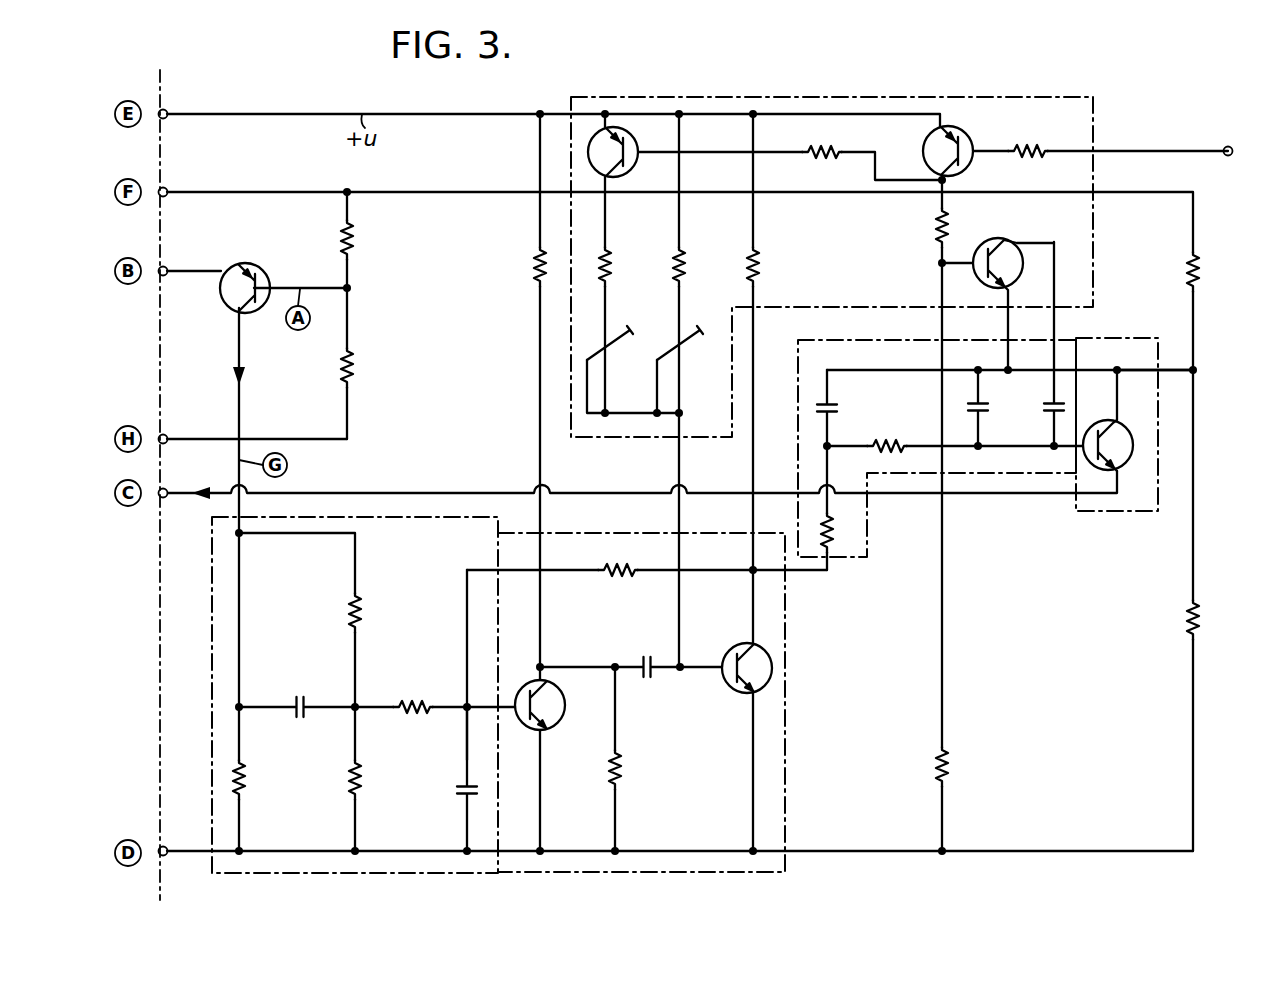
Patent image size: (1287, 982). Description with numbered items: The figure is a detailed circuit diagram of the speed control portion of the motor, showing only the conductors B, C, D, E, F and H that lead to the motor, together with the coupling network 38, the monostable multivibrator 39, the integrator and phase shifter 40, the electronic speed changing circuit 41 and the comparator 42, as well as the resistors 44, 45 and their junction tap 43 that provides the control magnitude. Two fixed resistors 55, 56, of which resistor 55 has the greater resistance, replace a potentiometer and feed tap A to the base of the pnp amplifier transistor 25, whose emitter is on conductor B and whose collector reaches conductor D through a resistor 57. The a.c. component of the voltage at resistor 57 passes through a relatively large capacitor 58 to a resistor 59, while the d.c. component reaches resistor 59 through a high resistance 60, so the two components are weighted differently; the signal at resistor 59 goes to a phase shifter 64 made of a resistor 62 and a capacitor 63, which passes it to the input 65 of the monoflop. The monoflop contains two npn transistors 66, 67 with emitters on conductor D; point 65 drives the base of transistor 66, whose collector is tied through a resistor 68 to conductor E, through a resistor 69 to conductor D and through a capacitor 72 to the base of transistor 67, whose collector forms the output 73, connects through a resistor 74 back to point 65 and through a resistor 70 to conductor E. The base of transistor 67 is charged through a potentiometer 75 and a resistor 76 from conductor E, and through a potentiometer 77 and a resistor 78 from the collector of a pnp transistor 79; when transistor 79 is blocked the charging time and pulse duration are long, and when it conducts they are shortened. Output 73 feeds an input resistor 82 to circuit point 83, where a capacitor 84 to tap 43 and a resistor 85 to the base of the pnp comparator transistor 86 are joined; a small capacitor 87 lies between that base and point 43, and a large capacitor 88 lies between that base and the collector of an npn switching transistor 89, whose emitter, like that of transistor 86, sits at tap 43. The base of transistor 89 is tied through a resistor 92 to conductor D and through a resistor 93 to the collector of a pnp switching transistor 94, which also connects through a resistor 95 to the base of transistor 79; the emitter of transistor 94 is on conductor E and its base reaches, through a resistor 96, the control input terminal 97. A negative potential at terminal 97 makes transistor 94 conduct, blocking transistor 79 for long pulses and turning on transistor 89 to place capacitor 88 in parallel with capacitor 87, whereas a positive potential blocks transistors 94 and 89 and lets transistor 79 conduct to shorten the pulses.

The pnp amplifier transistor 25 is at (252, 270).
The coupling network 38 is at (360, 516).
The monostable multivibrator 39 is at (605, 532).
The integrator and phase shifter 40 is at (818, 340).
The electronic speed changing circuit 41 is at (1098, 104).
The comparator 42 is at (1100, 513).
The junction tap 43 is at (1197, 370).
The resistor 44 is at (1201, 620).
The resistor 45 is at (1201, 272).
The fixed resistor 55 is at (354, 241).
The fixed resistor 56 is at (355, 368).
The resistor 57 is at (246, 781).
The capacitor 58 is at (306, 706).
The resistor 59 is at (363, 790).
The resistance 60 is at (363, 612).
The resistor 62 is at (410, 704).
The capacitor 63 is at (461, 796).
The phase shifter 64 is at (427, 782).
The input of the monoflop 65 is at (463, 712).
The npn transistor 66 is at (558, 725).
The npn transistor 67 is at (738, 690).
The resistor 68 is at (533, 268).
The resistor 69 is at (622, 771).
The resistor 70 is at (760, 268).
The capacitor 72 is at (640, 663).
The output of the monoflop 73 is at (758, 573).
The resistor 74 is at (622, 580).
The potentiometer 75 is at (687, 333).
The resistor 76 is at (686, 268).
The potentiometer 77 is at (612, 333).
The resistor 78 is at (612, 268).
The pnp transistor 79 is at (624, 170).
The input resistor 82 is at (836, 536).
The circuit point 83 is at (832, 450).
The capacitor 84 is at (834, 408).
The resistor 85 is at (880, 440).
The comparator transistor 86 is at (1115, 427).
The capacitor 87 is at (985, 406).
The capacitor 88 is at (1048, 416).
The npn switching transistor 89 is at (986, 236).
The resistor 92 is at (950, 768).
The resistor 93 is at (934, 230).
The pnp switching transistor 94 is at (966, 134).
The resistor 95 is at (813, 158).
The resistor 96 is at (1025, 146).
The control input terminal 97 is at (1240, 130).